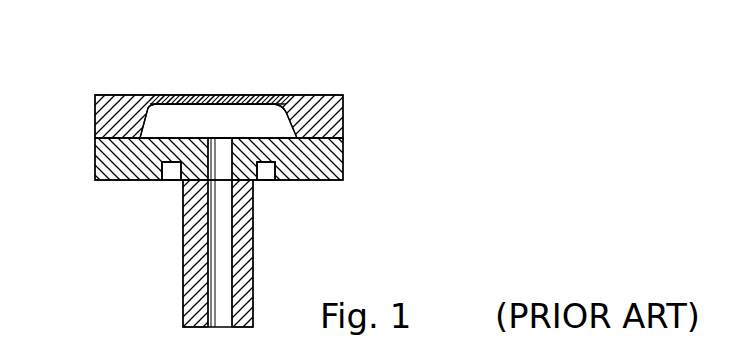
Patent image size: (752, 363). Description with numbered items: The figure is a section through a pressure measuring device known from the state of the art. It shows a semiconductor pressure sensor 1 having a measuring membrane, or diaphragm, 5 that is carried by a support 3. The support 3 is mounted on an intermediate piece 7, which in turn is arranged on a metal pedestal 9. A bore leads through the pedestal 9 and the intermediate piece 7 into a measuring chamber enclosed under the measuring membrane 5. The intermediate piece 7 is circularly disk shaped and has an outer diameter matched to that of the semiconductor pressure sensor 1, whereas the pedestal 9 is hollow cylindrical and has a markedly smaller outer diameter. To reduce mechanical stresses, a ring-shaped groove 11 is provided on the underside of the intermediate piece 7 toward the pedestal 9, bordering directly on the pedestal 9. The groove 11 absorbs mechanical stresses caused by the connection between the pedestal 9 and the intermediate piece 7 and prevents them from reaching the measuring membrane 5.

The semiconductor pressure sensor 1 is at (54, 43).
The support 3 is at (334, 115).
The measuring membrane 5 is at (238, 103).
The intermediate piece 7 is at (95, 163).
The metal pedestal 9 is at (193, 304).
The ring-shaped groove 11 is at (267, 180).